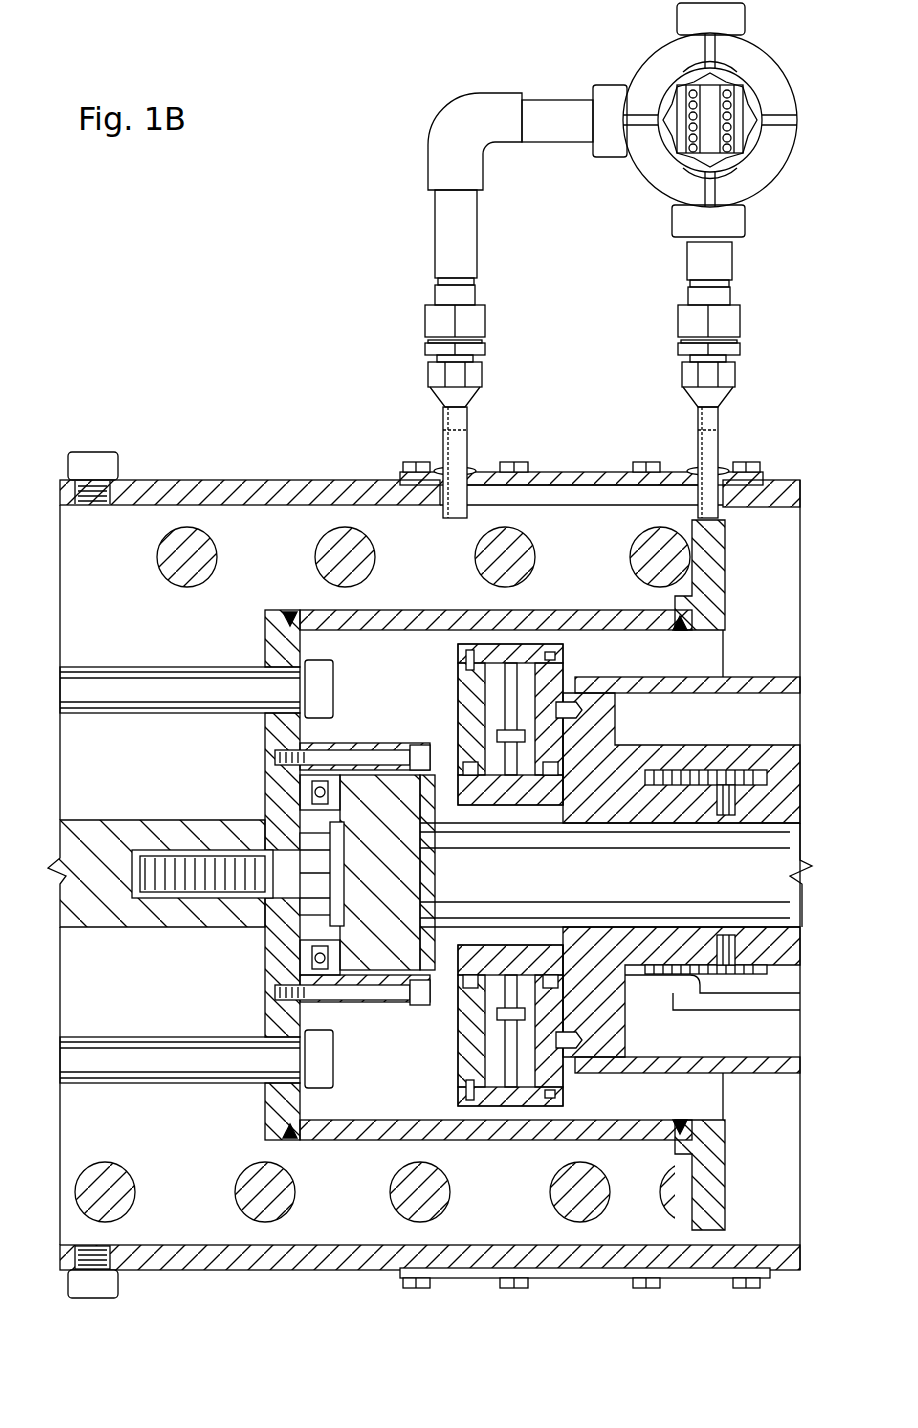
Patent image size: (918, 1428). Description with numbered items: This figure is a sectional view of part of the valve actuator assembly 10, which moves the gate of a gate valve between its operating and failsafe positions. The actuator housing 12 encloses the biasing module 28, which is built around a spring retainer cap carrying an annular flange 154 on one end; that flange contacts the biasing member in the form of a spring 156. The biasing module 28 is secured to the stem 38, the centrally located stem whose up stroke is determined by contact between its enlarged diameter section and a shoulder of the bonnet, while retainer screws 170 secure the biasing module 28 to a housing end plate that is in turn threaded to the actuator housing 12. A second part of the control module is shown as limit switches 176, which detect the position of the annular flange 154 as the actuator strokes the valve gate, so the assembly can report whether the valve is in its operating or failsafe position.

The valve actuator assembly 10 is at (275, 230).
The actuator housing 12 is at (218, 480).
The biasing module 28 is at (398, 610).
The stem 38 is at (93, 820).
The annular flange 154 is at (727, 565).
The spring 156 is at (540, 548).
The retainer screws 170 is at (120, 666).
The limit switches 176 is at (460, 445).